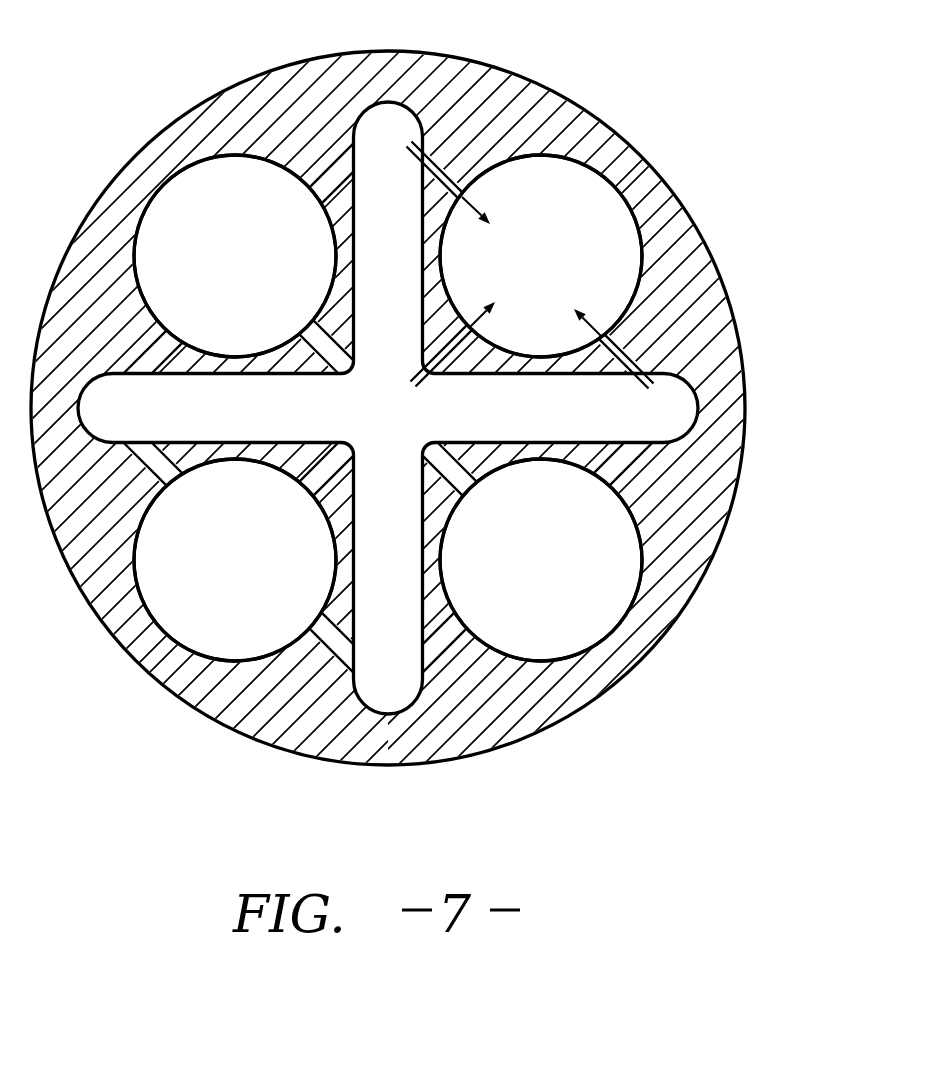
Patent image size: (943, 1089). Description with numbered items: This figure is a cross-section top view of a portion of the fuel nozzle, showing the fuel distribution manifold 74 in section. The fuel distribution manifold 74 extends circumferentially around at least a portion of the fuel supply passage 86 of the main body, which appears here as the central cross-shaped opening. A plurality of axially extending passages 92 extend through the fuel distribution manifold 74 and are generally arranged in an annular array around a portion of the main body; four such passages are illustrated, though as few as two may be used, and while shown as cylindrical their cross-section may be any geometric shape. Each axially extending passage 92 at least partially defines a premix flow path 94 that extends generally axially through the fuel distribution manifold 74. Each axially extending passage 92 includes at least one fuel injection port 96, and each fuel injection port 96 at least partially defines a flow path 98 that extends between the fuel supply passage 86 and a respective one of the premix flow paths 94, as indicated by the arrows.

The fuel distribution manifold 74 is at (670, 187).
The fuel supply passage 86 is at (366, 438).
The axially extending passages 92 is at (233, 150).
The premix flow path 94 is at (193, 197).
The fuel injection port 96 is at (483, 150).
The flow path 98 is at (413, 142).